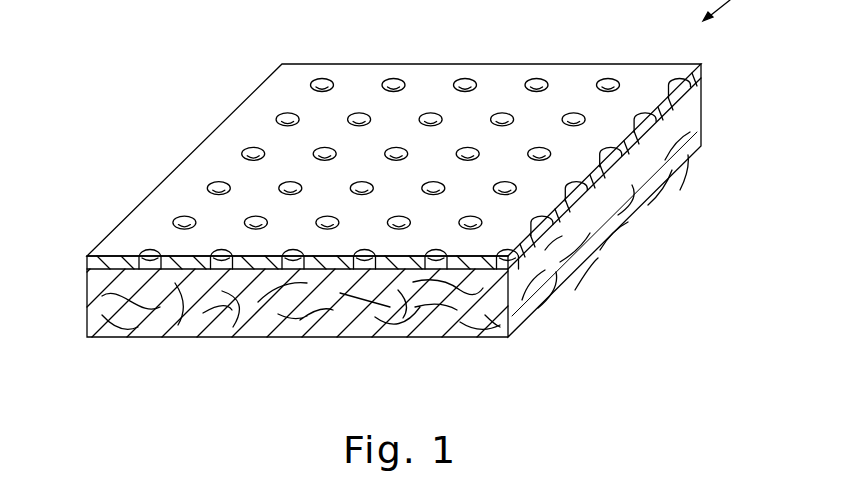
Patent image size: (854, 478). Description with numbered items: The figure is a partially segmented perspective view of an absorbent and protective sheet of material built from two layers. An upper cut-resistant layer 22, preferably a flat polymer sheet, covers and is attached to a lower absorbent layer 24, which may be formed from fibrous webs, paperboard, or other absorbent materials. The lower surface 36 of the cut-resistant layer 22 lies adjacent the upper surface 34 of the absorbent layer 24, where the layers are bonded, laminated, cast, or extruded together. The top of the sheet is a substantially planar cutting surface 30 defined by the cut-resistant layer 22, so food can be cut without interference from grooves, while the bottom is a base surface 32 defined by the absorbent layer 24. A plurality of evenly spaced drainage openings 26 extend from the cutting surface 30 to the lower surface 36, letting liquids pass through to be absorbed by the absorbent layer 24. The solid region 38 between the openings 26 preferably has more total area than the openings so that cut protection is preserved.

The cut-resistant layer 22 is at (88, 263).
The absorbent layer 24 is at (485, 317).
The drainage openings 26 is at (465, 83).
The cutting surface 30 is at (570, 87).
The base surface 32 is at (215, 338).
The upper surface of the absorbent layer 34 is at (497, 262).
The lower surface of the cut-resistant layer 36 is at (457, 272).
The solid region 38 is at (373, 167).